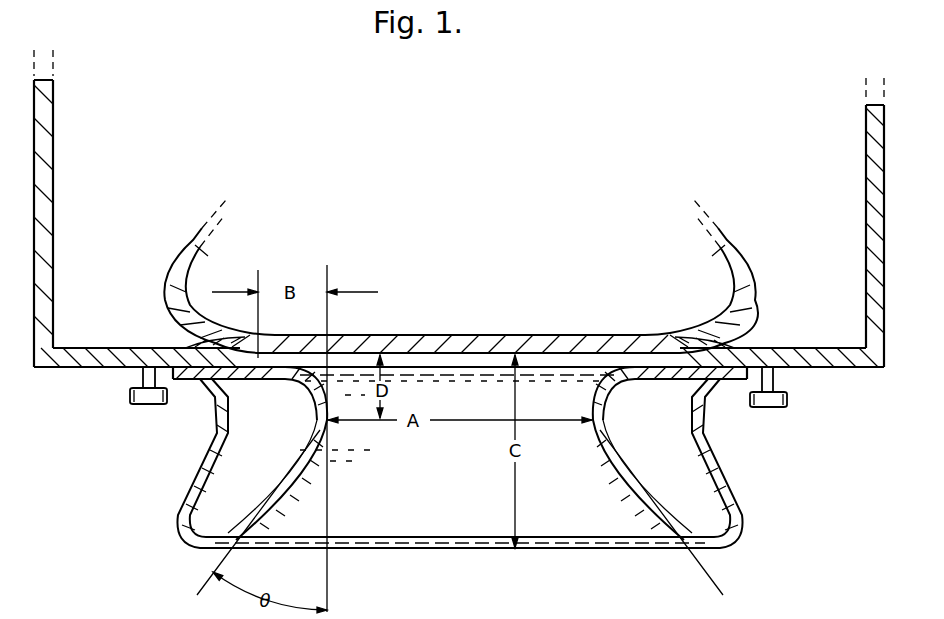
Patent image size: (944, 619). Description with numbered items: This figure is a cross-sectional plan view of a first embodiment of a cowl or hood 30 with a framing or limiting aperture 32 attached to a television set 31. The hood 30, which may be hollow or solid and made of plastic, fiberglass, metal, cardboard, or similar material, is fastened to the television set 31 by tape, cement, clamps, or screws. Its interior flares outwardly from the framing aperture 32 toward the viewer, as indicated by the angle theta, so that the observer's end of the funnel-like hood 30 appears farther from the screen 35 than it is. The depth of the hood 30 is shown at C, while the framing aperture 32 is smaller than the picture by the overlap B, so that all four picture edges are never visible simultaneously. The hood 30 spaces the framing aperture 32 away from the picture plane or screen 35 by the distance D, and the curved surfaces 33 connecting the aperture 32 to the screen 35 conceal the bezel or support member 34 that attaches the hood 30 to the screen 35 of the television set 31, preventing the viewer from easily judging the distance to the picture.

The hood 30 is at (195, 548).
The television set 31 is at (853, 368).
The framing aperture 32 is at (318, 424).
The surfaces 33 is at (293, 388).
The bezel 34 is at (207, 352).
The screen 35 is at (466, 337).